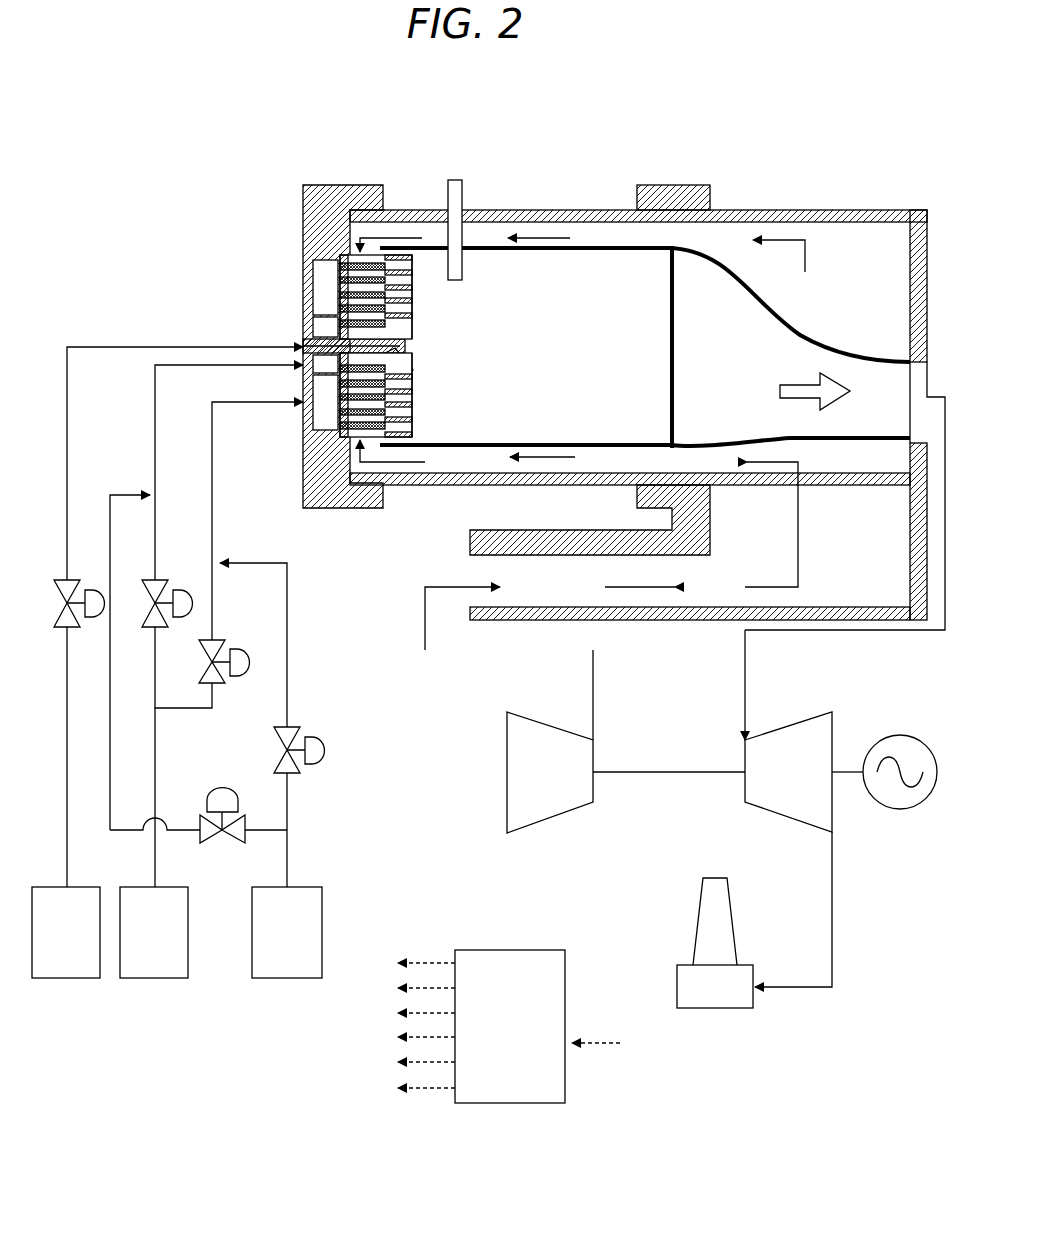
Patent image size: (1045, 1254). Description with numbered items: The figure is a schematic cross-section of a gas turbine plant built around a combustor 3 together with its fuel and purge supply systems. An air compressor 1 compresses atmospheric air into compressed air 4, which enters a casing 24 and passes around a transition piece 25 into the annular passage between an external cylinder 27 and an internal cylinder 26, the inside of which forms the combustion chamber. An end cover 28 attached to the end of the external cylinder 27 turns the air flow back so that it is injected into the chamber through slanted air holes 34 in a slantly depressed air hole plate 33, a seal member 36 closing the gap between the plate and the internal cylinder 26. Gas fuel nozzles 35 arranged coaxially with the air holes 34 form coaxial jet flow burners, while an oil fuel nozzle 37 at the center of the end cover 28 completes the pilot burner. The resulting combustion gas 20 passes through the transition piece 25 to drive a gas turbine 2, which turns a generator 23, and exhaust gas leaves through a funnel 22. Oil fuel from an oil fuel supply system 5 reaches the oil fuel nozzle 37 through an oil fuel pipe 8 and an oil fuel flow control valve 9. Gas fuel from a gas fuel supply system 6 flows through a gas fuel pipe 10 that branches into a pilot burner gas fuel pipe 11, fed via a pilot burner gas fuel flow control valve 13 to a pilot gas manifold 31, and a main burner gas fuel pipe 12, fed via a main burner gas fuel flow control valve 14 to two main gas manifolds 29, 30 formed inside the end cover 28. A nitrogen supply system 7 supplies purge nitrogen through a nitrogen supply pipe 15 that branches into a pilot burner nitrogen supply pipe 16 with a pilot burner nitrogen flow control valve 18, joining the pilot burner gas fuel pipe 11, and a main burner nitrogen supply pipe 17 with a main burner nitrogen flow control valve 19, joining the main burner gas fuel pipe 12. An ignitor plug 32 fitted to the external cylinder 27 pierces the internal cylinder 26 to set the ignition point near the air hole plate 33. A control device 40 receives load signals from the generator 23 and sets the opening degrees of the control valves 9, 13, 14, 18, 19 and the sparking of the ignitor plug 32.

The air compressor 1 is at (626, 741).
The gas turbine 2 is at (804, 808).
The combustor 3 is at (353, 323).
The compressed air 4 is at (802, 545).
The oil fuel supply system 5 is at (66, 932).
The gas fuel supply system 6 is at (154, 932).
The nitrogen supply system 7 is at (287, 932).
The oil fuel pipe 8 is at (65, 705).
The oil fuel flow control valve 9 is at (62, 580).
The gas fuel pipe 10 is at (155, 738).
The pilot burner gas fuel pipe 11 is at (152, 452).
The main burner gas fuel pipe 12 is at (213, 527).
The pilot burner gas fuel flow control valve 13 is at (195, 598).
The main burner gas fuel flow control valve 14 is at (250, 653).
The nitrogen supply pipe 15 is at (287, 868).
The pilot burner nitrogen supply pipe 16 is at (110, 785).
The main burner nitrogen supply pipe 17 is at (287, 805).
The pilot burner nitrogen flow control valve 18 is at (220, 845).
The main burner nitrogen flow control valve 19 is at (327, 748).
The combustion gas 20 is at (833, 380).
The funnel 22 is at (715, 943).
The generator 23 is at (900, 735).
The casing 24 is at (803, 270).
The transition piece 25 is at (717, 248).
The internal cylinder 26 is at (650, 190).
The external cylinder 27 is at (405, 190).
The end cover 28 is at (330, 187).
The main gas manifold 29 is at (317, 273).
The main gas manifold 30 is at (312, 423).
The pilot gas manifold 31 is at (315, 327).
The ignitor plug 32 is at (458, 178).
The air hole plate 33 is at (415, 370).
The air holes 34 is at (415, 292).
The gas fuel nozzles 35 is at (368, 430).
The seal member 36 is at (420, 457).
The oil fuel nozzle 37 is at (417, 333).
The control device 40 is at (560, 988).